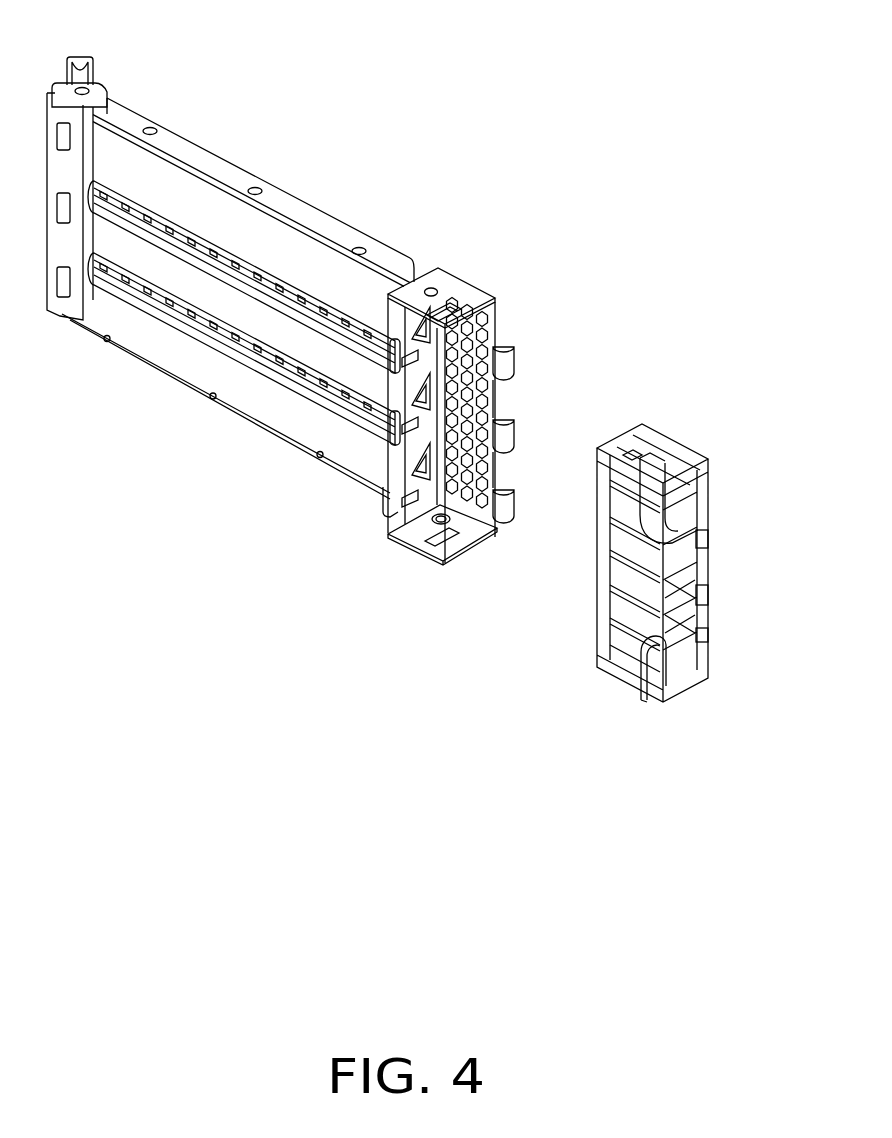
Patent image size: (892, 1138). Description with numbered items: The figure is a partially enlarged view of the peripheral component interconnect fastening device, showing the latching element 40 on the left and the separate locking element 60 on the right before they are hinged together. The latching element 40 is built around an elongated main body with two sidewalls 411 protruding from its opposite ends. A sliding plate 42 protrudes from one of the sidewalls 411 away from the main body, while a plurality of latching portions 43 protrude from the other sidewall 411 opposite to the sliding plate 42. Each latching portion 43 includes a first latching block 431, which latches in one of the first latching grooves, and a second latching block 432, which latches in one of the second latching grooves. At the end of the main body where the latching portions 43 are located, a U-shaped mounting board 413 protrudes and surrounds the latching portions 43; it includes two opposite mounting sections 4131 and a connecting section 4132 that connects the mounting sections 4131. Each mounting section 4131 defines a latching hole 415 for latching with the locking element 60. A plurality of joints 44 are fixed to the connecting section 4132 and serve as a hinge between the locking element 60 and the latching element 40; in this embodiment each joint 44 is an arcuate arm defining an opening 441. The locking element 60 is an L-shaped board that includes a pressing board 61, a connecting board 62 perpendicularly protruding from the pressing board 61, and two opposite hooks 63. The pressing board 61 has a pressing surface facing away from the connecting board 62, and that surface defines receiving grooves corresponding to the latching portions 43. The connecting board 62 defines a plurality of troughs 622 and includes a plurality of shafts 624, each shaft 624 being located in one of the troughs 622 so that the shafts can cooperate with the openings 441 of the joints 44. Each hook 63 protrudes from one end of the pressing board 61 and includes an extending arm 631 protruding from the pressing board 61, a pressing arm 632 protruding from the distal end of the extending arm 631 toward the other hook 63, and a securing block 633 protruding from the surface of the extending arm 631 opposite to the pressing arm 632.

The latching element 40 is at (322, 289).
The sliding plate 42 is at (77, 58).
The sidewalls 411 is at (389, 292).
The mounting board 413 is at (488, 370).
The mounting sections 4131 is at (437, 278).
The connecting section 4132 is at (491, 393).
The latching hole 415 is at (443, 300).
The latching portions 43 is at (365, 437).
The first latching block 431 is at (410, 518).
The second latching block 432 is at (413, 468).
The joints 44 is at (503, 362).
The opening 441 is at (510, 494).
The locking element 60 is at (661, 558).
The pressing board 61 is at (603, 623).
The connecting board 62 is at (703, 547).
The troughs 622 is at (687, 570).
The shafts 624 is at (703, 653).
The hooks 63 is at (653, 673).
The extending arm 631 is at (627, 445).
The pressing arm 632 is at (657, 485).
The securing block 633 is at (650, 442).